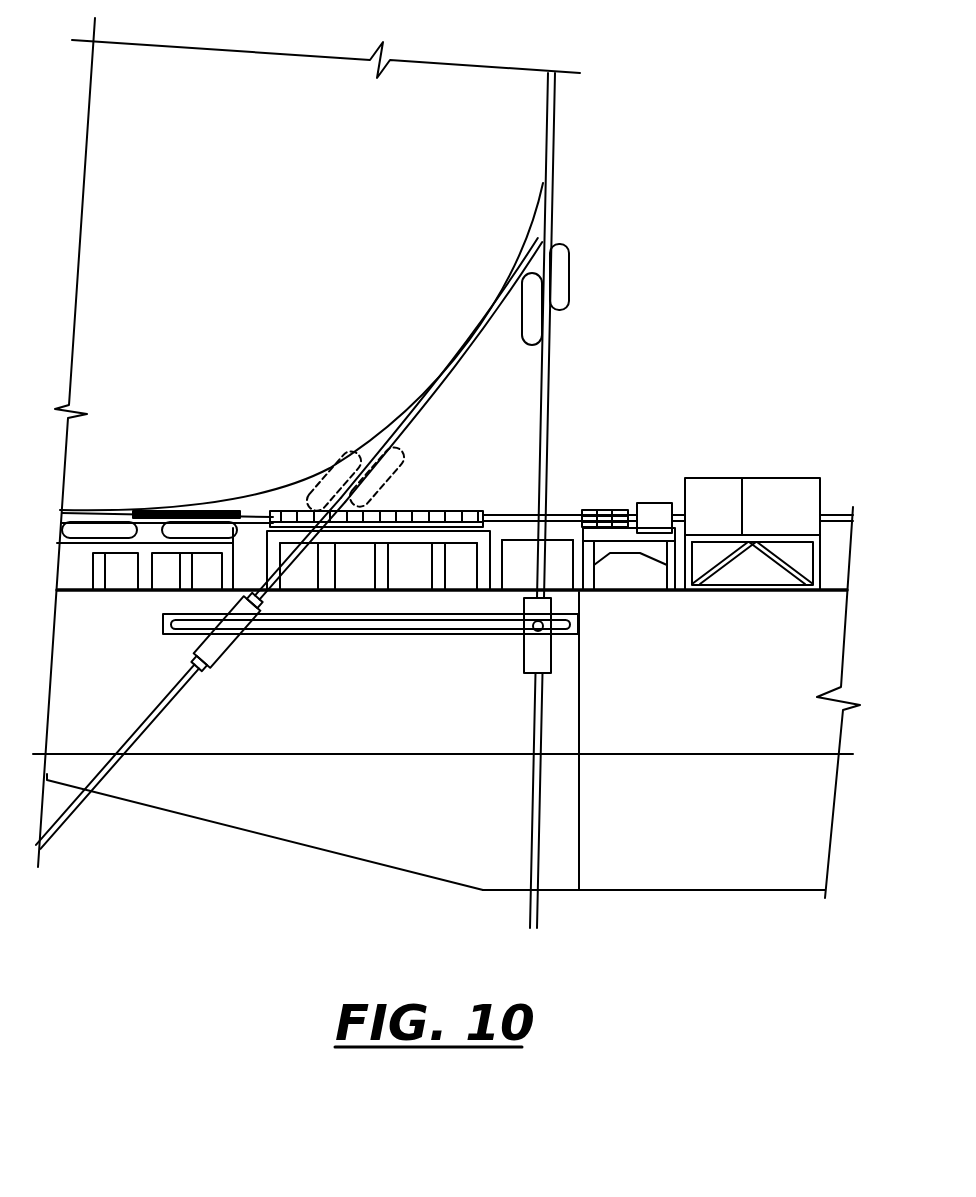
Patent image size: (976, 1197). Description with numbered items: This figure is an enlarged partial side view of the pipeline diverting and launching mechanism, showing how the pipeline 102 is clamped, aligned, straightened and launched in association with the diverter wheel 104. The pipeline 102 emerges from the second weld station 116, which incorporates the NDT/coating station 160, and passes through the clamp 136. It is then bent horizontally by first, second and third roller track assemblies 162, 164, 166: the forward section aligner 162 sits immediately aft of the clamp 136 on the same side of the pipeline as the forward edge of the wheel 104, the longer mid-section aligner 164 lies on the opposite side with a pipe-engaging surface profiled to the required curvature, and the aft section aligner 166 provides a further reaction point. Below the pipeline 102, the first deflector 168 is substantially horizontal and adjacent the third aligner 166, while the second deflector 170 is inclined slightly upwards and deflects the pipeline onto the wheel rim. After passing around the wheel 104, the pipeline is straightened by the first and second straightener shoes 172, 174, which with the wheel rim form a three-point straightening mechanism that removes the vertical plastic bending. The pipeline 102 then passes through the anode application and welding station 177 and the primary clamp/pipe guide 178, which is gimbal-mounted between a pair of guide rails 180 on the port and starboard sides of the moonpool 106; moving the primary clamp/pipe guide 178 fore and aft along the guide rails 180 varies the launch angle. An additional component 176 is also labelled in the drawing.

The pipeline 102 is at (553, 184).
The diverter wheel 104 is at (527, 109).
The moonpool 106 is at (430, 853).
The second weld station 116 is at (768, 492).
The clamp 136 is at (653, 517).
The NDT/coating station 160 is at (710, 492).
The first roller track assembly (forward section aligner) 162 is at (600, 510).
The second roller track assembly (mid-section aligner) 164 is at (461, 511).
The third roller track assembly (aft section aligner) 166 is at (215, 520).
The first roller track assembly (first deflector) 168 is at (174, 528).
The second roller track assembly (second deflector) 170 is at (73, 527).
The first straightener shoe 172 is at (563, 278).
The second straightener shoe 174 is at (530, 327).
The mast step block 176 is at (556, 572).
The anode application and welding station 177 is at (552, 559).
The primary clamp/pipe guide 178 is at (533, 645).
The guide rails 180 is at (420, 627).